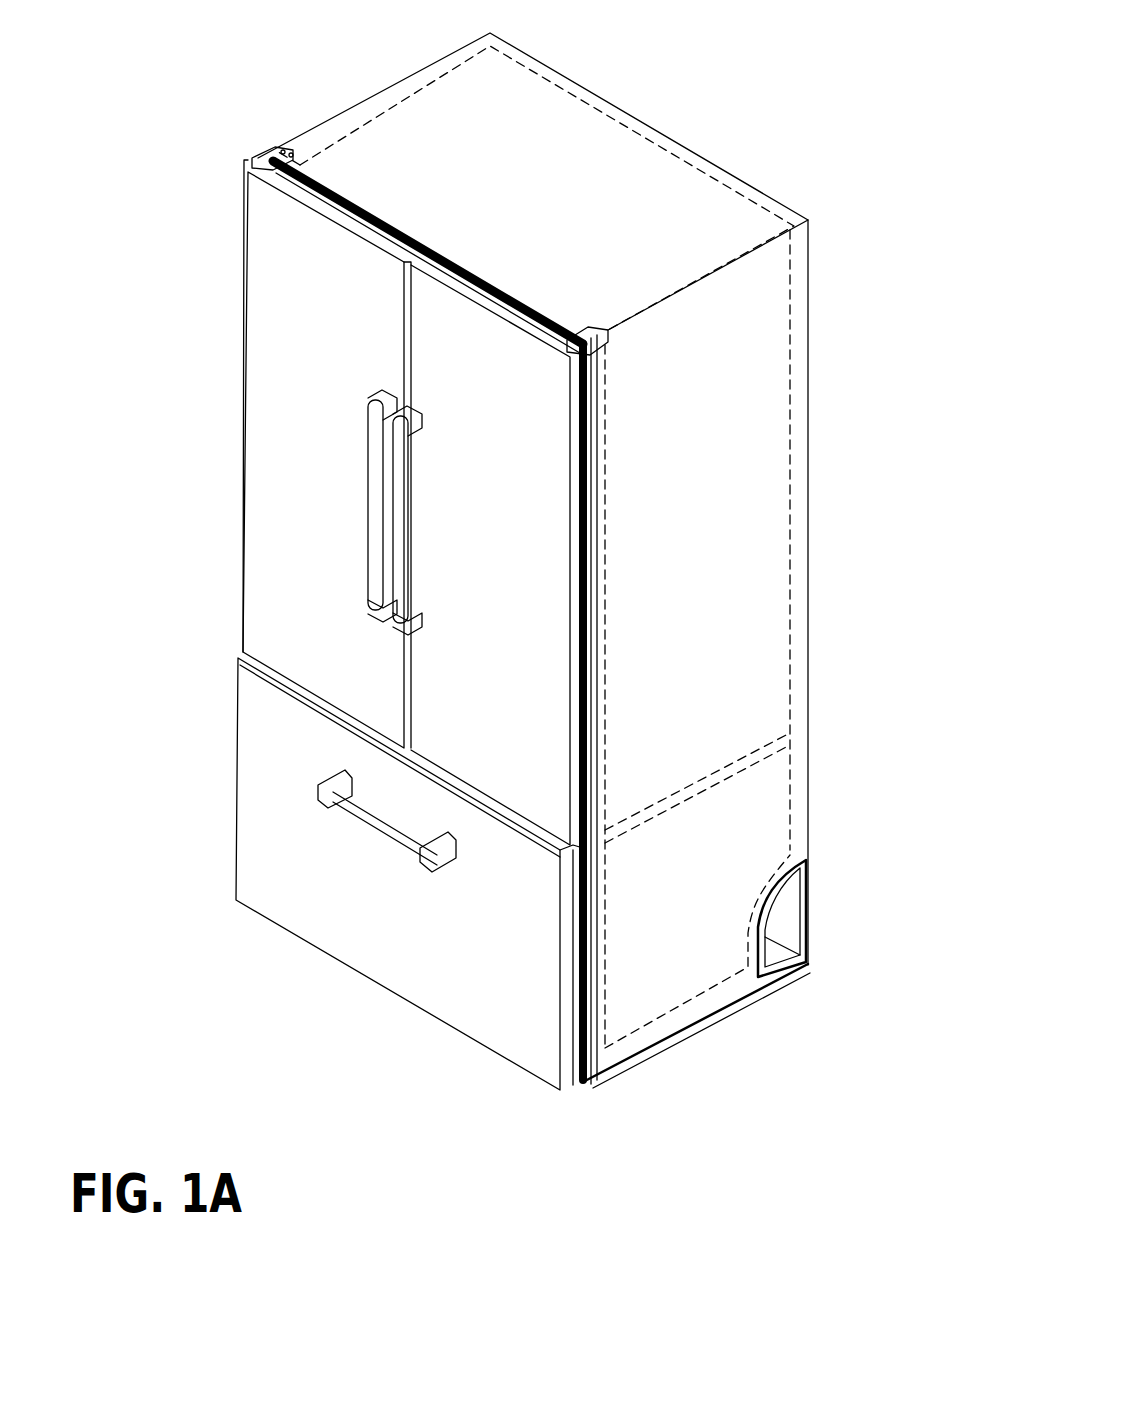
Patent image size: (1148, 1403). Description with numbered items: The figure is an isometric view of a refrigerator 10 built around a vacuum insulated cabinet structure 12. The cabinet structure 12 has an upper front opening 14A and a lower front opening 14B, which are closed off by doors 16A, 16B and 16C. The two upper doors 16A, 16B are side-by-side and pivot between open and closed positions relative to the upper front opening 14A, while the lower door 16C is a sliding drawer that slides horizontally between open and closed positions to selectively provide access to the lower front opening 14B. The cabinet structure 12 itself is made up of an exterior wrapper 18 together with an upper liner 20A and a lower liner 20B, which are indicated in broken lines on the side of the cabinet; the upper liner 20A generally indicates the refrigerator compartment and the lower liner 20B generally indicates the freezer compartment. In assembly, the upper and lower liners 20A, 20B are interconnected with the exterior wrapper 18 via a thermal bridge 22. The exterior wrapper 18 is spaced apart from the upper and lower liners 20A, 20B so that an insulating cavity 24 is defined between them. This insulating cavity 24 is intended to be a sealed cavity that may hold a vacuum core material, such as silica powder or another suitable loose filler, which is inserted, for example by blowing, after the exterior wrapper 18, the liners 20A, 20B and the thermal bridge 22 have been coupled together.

The refrigerator 10 is at (728, 120).
The vacuum insulated cabinet structure 12 is at (780, 192).
The upper front opening 14A is at (368, 200).
The lower front opening 14B is at (588, 878).
The door 16A is at (293, 381).
The door 16B is at (480, 602).
The door 16C is at (277, 811).
The exterior wrapper 18 is at (577, 83).
The upper liner 20A is at (735, 398).
The lower liner 20B is at (735, 843).
The thermal bridge 22 is at (602, 692).
The insulating cavity 24 is at (795, 556).